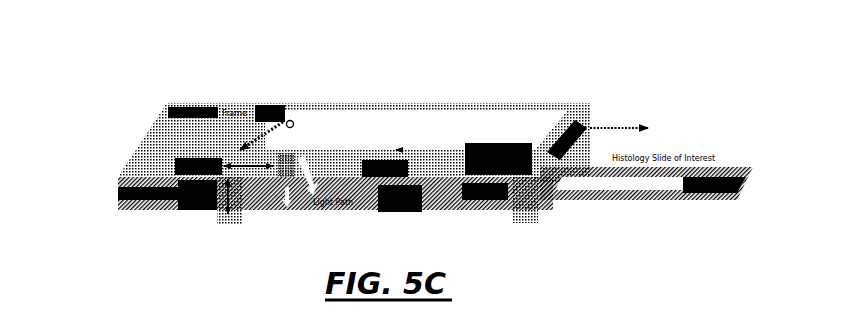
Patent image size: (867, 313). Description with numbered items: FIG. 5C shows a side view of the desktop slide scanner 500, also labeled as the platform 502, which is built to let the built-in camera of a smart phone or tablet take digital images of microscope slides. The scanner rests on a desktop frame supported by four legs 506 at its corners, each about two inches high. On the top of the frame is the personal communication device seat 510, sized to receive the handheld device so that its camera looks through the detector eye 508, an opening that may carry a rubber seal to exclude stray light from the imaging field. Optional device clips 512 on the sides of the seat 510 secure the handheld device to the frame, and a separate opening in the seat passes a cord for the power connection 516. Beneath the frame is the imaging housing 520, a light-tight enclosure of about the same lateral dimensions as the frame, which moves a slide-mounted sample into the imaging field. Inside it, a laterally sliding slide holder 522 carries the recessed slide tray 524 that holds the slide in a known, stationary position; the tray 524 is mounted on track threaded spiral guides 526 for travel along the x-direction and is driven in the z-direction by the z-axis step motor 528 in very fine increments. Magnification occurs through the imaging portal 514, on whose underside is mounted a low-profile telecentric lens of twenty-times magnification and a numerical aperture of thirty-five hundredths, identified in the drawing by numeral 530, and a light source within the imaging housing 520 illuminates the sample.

The desktop slide scanner 500 is at (525, 86).
The platform 502 is at (116, 88).
The legs 506 is at (393, 214).
The detector eye 508 is at (293, 113).
The personal communication device seat 510 is at (426, 135).
The device clips 512 is at (464, 159).
The imaging portal 514 is at (400, 198).
The power connection 516 is at (672, 124).
The imaging housing 520 is at (197, 195).
The slide holder 522 is at (575, 207).
The slide tray 524 is at (656, 202).
The track threaded spiral guides 526 is at (132, 163).
The z-axis step motor 528 is at (117, 170).
The objective lens 530 is at (318, 198).